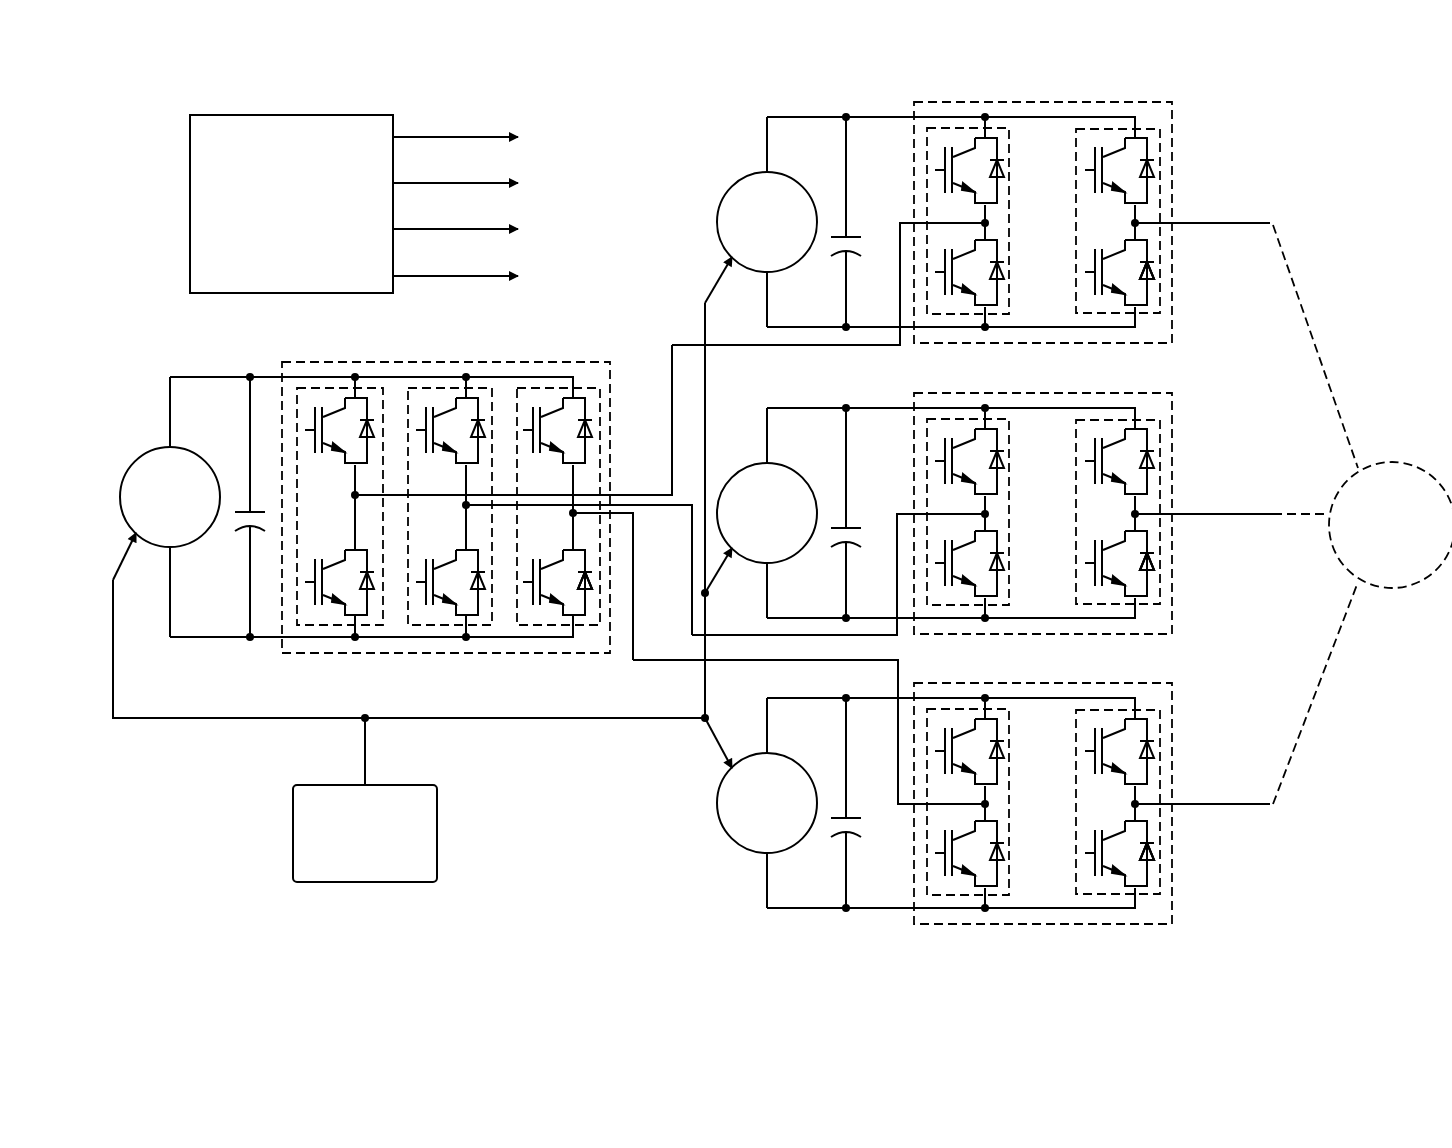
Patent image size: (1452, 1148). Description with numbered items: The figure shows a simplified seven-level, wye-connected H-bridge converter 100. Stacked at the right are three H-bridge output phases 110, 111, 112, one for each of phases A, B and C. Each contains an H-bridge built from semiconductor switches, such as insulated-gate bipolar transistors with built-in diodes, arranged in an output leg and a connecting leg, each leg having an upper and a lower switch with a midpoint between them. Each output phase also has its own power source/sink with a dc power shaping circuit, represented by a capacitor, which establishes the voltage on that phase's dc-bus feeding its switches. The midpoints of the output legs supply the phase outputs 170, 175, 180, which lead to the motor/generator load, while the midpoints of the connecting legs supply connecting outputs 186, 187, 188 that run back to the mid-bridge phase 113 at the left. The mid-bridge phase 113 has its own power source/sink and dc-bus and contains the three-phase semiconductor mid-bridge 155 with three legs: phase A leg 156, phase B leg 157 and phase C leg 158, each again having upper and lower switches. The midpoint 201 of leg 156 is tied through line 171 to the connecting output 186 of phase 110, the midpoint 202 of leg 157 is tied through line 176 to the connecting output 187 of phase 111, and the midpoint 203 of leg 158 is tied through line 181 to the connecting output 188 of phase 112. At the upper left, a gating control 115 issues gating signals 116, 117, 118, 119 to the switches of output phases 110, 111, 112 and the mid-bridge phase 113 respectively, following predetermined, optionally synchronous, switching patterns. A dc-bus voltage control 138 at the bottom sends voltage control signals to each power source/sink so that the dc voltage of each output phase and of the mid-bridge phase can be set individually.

The converter 100 is at (571, 105).
The H-bridge output phase A 110 is at (975, 87).
The H-bridge output phase B 111 is at (975, 378).
The H-bridge output phase C 112 is at (975, 668).
The mid-bridge phase 113 is at (397, 335).
The gating control 115 is at (283, 114).
The gating signal 116 is at (420, 136).
The gating signal 117 is at (420, 182).
The gating signal 118 is at (420, 228).
The gating signal 119 is at (420, 275).
The dc-bus voltage control 138 is at (292, 851).
The three-phase semiconductor mid-bridge 155 is at (425, 655).
The phase A leg 156 is at (312, 385).
The phase B leg 157 is at (422, 385).
The phase C leg 158 is at (525, 385).
The phase output 170 is at (1240, 222).
The interconnection line 171 is at (640, 492).
The phase output 175 is at (1240, 513).
The interconnection line 176 is at (652, 506).
The phase output 180 is at (1238, 803).
The interconnection line 181 is at (636, 598).
The connecting output 186 is at (900, 240).
The connecting output 187 is at (897, 540).
The connecting output 188 is at (898, 725).
The midpoint 201 is at (348, 496).
The midpoint 202 is at (458, 505).
The midpoint 203 is at (568, 514).